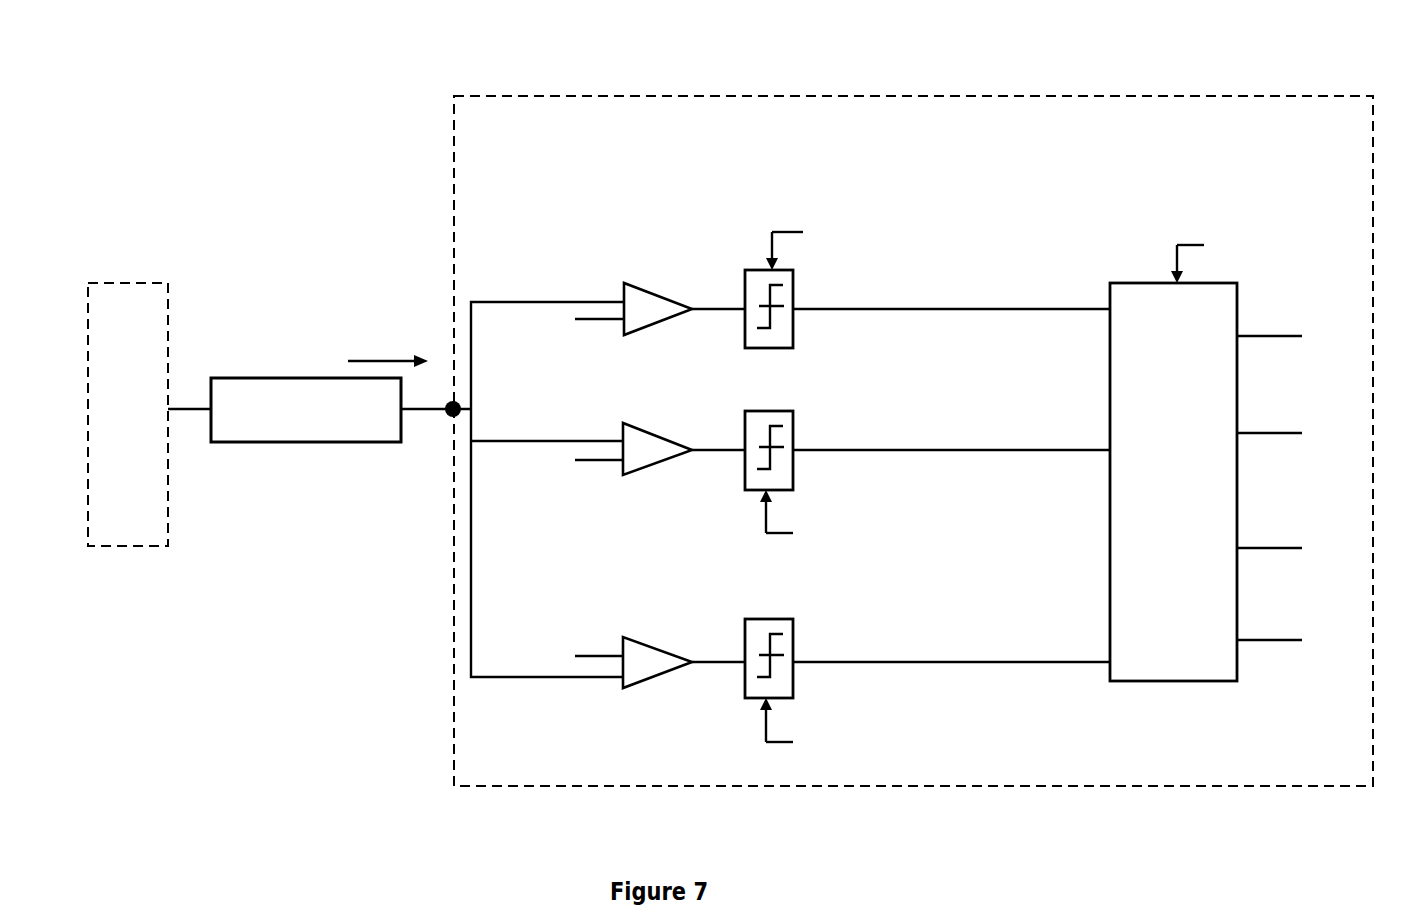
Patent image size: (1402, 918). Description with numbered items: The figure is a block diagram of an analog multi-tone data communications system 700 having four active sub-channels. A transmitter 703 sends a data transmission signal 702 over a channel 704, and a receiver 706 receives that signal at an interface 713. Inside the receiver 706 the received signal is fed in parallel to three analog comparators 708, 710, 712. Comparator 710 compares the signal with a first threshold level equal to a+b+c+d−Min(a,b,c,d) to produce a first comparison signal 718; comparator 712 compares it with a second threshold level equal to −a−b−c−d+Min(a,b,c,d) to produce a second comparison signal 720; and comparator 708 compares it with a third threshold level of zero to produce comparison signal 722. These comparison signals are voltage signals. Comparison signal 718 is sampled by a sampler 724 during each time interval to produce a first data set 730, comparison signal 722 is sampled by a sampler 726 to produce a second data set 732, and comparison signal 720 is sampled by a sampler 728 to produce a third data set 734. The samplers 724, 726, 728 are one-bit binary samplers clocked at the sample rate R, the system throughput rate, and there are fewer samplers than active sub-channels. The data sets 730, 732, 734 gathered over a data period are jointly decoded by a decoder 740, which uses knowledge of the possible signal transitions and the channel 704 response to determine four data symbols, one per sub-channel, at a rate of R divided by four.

The AMT data communications system 700 is at (730, 411).
The data transmission signal 702 is at (319, 366).
The transmitter 703 is at (128, 414).
The channel 704 is at (306, 410).
The receiver 706 is at (913, 441).
The comparator 708 is at (632, 474).
The comparator 710 is at (645, 283).
The comparator 712 is at (637, 687).
The interface 713 is at (447, 413).
The first comparison signal 718 is at (717, 292).
The second comparison signal 720 is at (717, 649).
The comparison signal 722 is at (717, 437).
The sampler 724 is at (748, 338).
The sampler 726 is at (747, 485).
The sampler 728 is at (747, 699).
The first data set 730 is at (951, 280).
The second data set 732 is at (951, 422).
The third data set 734 is at (951, 635).
The decoder 740 is at (1218, 451).